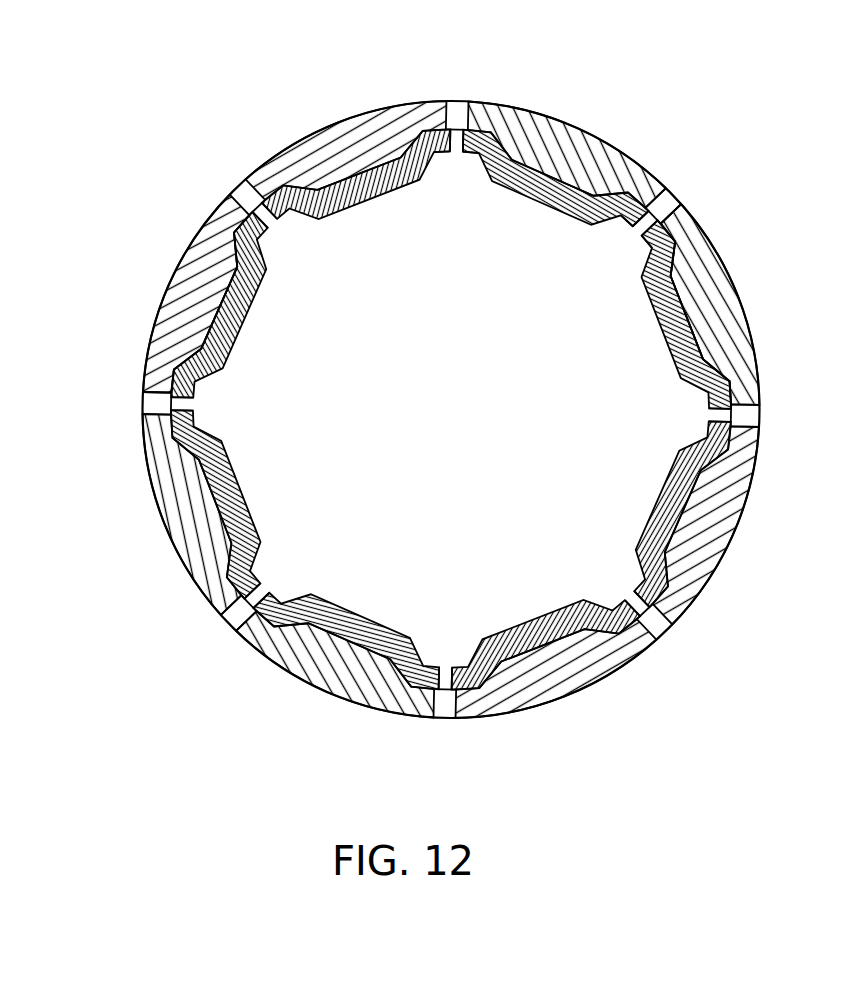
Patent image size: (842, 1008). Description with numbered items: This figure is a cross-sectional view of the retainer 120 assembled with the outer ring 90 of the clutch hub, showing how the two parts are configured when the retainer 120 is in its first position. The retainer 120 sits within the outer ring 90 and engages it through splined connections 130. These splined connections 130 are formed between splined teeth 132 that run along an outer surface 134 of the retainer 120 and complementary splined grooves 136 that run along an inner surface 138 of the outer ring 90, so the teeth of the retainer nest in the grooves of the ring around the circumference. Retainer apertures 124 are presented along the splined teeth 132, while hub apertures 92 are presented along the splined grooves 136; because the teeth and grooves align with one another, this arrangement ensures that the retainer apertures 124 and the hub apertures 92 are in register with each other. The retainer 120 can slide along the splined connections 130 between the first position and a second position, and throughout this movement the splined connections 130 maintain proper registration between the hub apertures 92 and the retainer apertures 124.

The outer ring 90 is at (597, 160).
The hub apertures 92 is at (667, 203).
The retainer 120 is at (522, 172).
The retainer apertures 124 is at (270, 213).
The splined connections 130 is at (455, 186).
The splined teeth 132 is at (731, 398).
The outer surface 134 is at (728, 302).
The splined grooves 136 is at (150, 392).
The inner surface 138 is at (213, 310).